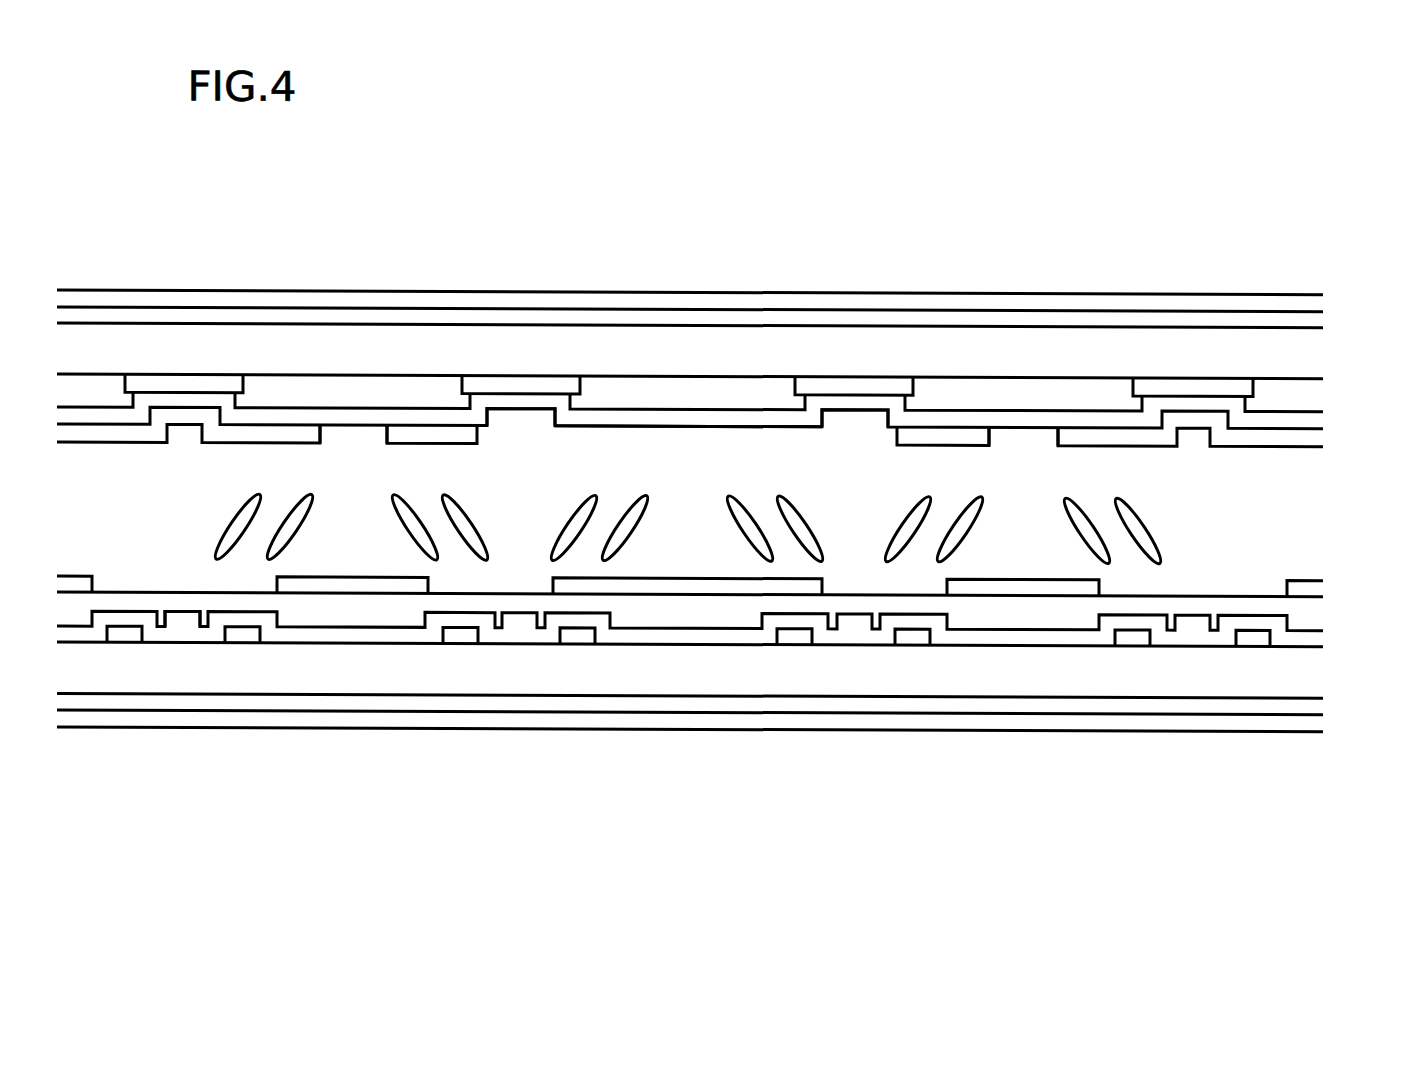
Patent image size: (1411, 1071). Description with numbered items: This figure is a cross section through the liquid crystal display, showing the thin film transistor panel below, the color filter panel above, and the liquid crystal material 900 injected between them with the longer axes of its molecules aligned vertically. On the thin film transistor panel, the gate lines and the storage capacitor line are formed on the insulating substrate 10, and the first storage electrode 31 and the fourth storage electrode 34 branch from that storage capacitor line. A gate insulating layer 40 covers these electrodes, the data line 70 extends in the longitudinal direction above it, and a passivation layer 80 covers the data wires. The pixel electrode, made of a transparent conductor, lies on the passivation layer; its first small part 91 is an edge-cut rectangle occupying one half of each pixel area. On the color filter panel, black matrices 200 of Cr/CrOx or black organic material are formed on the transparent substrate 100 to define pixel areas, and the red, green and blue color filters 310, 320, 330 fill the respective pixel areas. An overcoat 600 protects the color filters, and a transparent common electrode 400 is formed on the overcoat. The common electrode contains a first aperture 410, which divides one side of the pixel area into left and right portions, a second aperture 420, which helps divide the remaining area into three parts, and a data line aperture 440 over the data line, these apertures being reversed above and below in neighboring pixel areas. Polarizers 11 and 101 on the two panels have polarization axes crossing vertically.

The insulating substrate 10 is at (753, 689).
The polarizer 11 is at (403, 721).
The first storage electrode 31 is at (242, 637).
The fourth storage electrode 34 is at (125, 637).
The gate insulating layer 40 is at (522, 620).
The data line 70 is at (185, 620).
The passivation layer 80 is at (295, 620).
The first small part 91 is at (347, 585).
The transparent substrate 100 is at (752, 335).
The polarizer 101 is at (451, 300).
The black matrix 200 is at (185, 385).
The red color filter 310 is at (278, 385).
The green color filter 320 is at (643, 385).
The blue color filter 330 is at (1047, 385).
The common electrode 400 is at (952, 438).
The first aperture 410 is at (357, 433).
The second aperture 420 is at (688, 436).
The data line aperture 440 is at (523, 418).
The overcoat 600 is at (587, 417).
The liquid crystal material 900 is at (1293, 529).